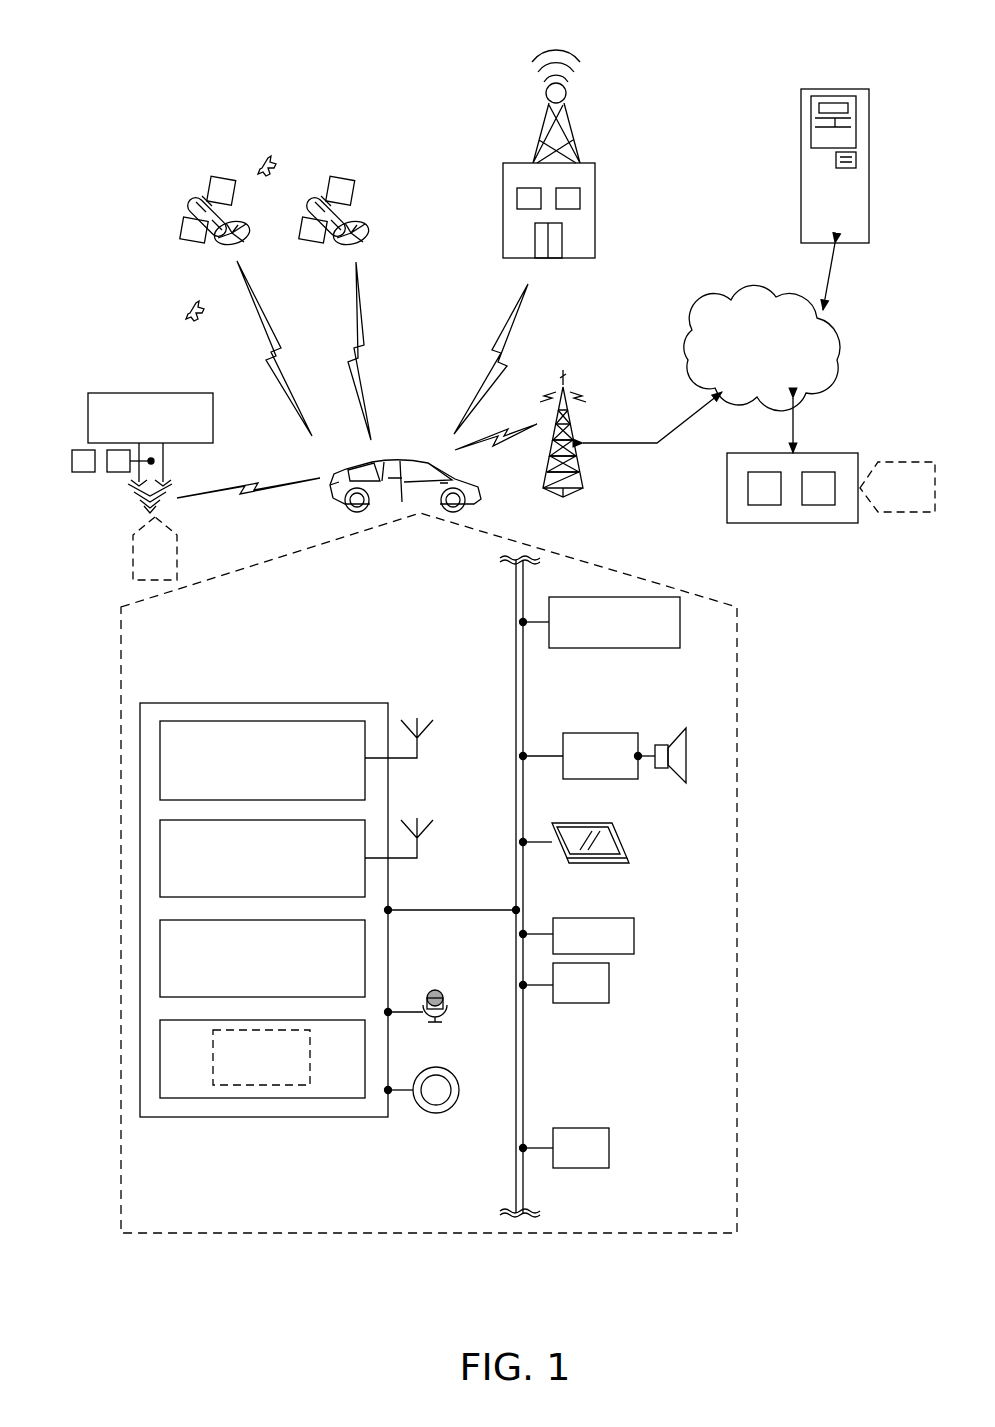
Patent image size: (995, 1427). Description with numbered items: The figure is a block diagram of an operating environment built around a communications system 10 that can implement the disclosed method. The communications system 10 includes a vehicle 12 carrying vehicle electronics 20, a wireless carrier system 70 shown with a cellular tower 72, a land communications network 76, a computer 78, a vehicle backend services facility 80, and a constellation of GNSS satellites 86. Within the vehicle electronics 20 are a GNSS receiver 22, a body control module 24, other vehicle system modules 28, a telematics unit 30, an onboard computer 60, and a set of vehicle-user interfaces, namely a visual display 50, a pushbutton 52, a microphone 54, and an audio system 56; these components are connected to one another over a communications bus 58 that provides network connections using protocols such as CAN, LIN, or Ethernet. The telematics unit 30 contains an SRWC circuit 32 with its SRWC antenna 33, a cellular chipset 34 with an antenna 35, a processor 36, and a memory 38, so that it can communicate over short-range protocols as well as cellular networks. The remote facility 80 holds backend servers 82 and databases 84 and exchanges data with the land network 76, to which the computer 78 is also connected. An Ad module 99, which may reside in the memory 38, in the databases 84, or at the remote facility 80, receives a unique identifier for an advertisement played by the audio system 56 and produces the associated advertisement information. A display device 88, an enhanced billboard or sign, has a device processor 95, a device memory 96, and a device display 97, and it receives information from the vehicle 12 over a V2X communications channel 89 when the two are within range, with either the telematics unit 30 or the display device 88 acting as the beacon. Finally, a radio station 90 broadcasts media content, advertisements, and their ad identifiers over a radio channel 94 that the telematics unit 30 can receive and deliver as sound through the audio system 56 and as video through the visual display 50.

The communications system 10 is at (715, 92).
The vehicle 12 is at (400, 448).
The vehicle electronics 20 is at (409, 1242).
The global navigation satellite system (GNSS) receiver 22 is at (636, 935).
The body control module 24 is at (610, 983).
The vehicle system modules 28 is at (610, 1149).
The telematics unit 30 is at (240, 703).
The SRWC circuit 32 is at (160, 765).
The SRWC antenna 33 is at (420, 752).
The cellular chipset 34 is at (160, 858).
The antenna 35 is at (420, 852).
The processor 36 is at (160, 962).
The memory 38 is at (160, 1063).
The visual display 50 is at (626, 843).
The pushbutton 52 is at (452, 1068).
The microphone 54 is at (438, 990).
The audio system 56 is at (610, 733).
The communications bus 58 is at (516, 1170).
The onboard computer 60 is at (586, 648).
The wireless carrier system 70 is at (610, 480).
The cellular tower 72 is at (572, 410).
The land communications network 76 is at (840, 340).
The computer 78 is at (872, 172).
The vehicle backend services facility 80 is at (838, 453).
The vehicle backend services servers 82 is at (765, 505).
The databases 84 is at (816, 505).
The GNSS satellites 86 is at (385, 258).
The display device 88 is at (141, 386).
The V2X communications channel 89 is at (262, 478).
The radio station 90 is at (596, 193).
The radio channel 94 is at (510, 332).
The device processor 95 is at (86, 472).
The device memory 96 is at (120, 472).
The device display 97 is at (100, 395).
The Ad module 99 is at (886, 508).